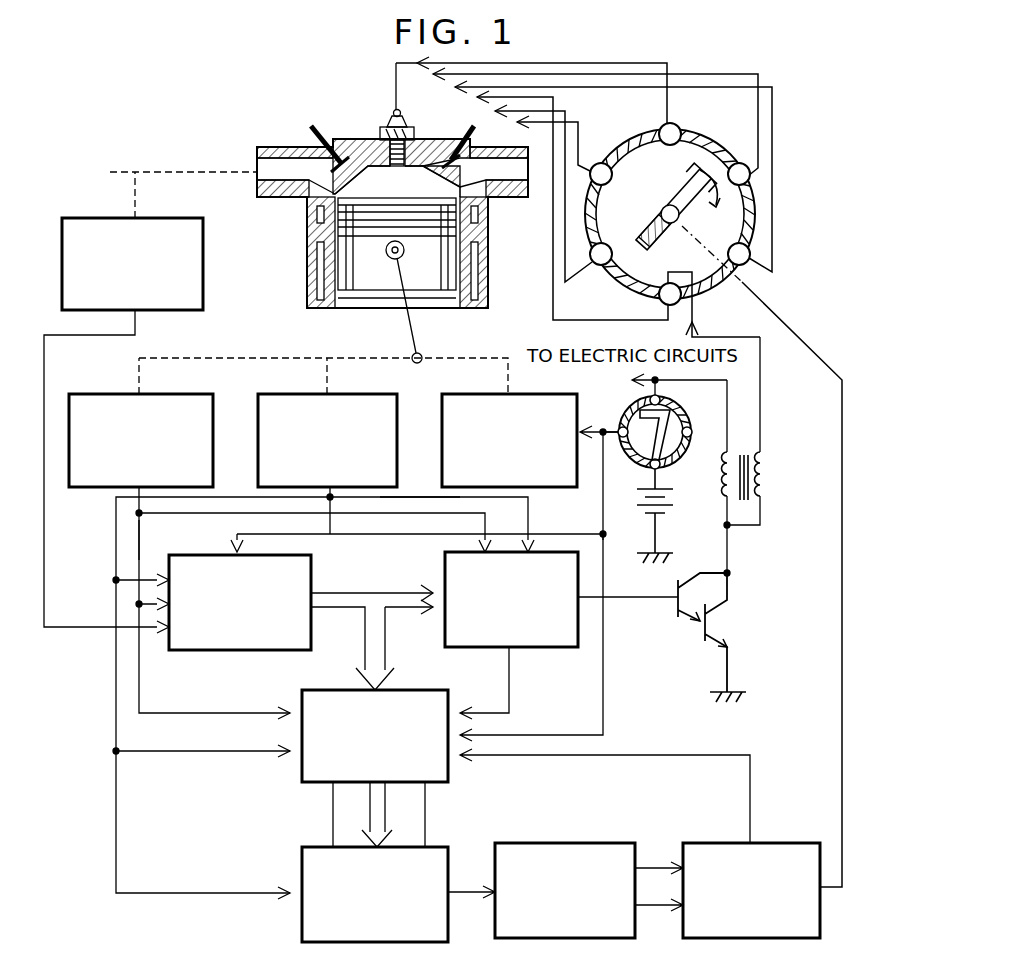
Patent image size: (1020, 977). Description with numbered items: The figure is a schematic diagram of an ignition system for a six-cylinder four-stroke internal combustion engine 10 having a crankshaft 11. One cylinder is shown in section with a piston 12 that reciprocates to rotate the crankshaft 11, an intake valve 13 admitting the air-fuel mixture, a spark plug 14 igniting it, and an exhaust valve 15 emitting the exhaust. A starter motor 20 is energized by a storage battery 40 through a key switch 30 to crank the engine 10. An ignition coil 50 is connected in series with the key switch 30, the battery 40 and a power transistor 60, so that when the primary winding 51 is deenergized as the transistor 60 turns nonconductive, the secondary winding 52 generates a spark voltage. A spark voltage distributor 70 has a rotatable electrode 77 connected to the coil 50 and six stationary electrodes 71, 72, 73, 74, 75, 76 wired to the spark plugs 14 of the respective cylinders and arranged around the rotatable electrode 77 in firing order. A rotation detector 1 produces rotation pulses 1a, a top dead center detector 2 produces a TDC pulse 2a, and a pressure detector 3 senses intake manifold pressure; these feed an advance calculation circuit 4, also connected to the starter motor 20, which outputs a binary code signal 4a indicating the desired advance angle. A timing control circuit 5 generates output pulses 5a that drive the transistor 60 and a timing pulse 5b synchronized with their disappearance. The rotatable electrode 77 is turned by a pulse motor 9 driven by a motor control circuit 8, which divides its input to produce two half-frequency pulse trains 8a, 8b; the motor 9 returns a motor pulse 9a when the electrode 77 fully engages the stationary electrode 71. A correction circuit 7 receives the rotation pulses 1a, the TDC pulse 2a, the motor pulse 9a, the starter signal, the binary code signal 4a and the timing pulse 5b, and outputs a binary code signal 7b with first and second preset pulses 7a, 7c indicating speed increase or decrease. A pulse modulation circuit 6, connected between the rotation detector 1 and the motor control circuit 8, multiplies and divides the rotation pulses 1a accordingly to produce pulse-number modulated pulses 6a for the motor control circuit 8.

The rotation detector 1 is at (388, 400).
The rotation pulses 1a is at (418, 497).
The top dead center detector 2 is at (208, 412).
The TDC pulse 2a is at (140, 538).
The pressure detector 3 is at (200, 260).
The advance calculation circuit 4 is at (304, 566).
The binary code signal 4a is at (362, 600).
The timing control circuit 5 is at (568, 568).
The output pulses 5a is at (624, 598).
The timing pulse 5b is at (511, 660).
The pulse modulation circuit 6 is at (446, 852).
The pulse-number modulated pulses 6a is at (470, 886).
The correction circuit 7 is at (428, 700).
The first preset pulse 7a is at (332, 794).
The binary code signal 7b is at (368, 794).
The second preset pulse 7c is at (424, 794).
The motor control circuit 8 is at (622, 846).
The first train of pulses 8a is at (642, 866).
The second train of pulses 8b is at (654, 904).
The pulse motor 9 is at (806, 848).
The motor pulse 9a is at (702, 756).
The internal combustion engine 10 is at (322, 111).
The crankshaft 11 is at (418, 353).
The piston 12 is at (366, 282).
The intake valve 13 is at (312, 128).
The spark plug 14 is at (402, 118).
The exhaust valve 15 is at (458, 138).
The starter motor 20 is at (564, 398).
The key switch 30 is at (680, 414).
The storage battery 40 is at (666, 482).
The ignition coil 50 is at (760, 436).
The primary winding 51 is at (720, 488).
The secondary winding 52 is at (762, 490).
The power transistor 60 is at (722, 620).
The spark voltage distributor 70 is at (732, 120).
The stationary electrode 71 is at (662, 126).
The stationary electrode 72 is at (601, 266).
The stationary electrode 73 is at (746, 266).
The stationary electrode 74 is at (600, 162).
The stationary electrode 75 is at (741, 162).
The stationary electrode 76 is at (659, 298).
The rotatable electrode 77 is at (668, 192).